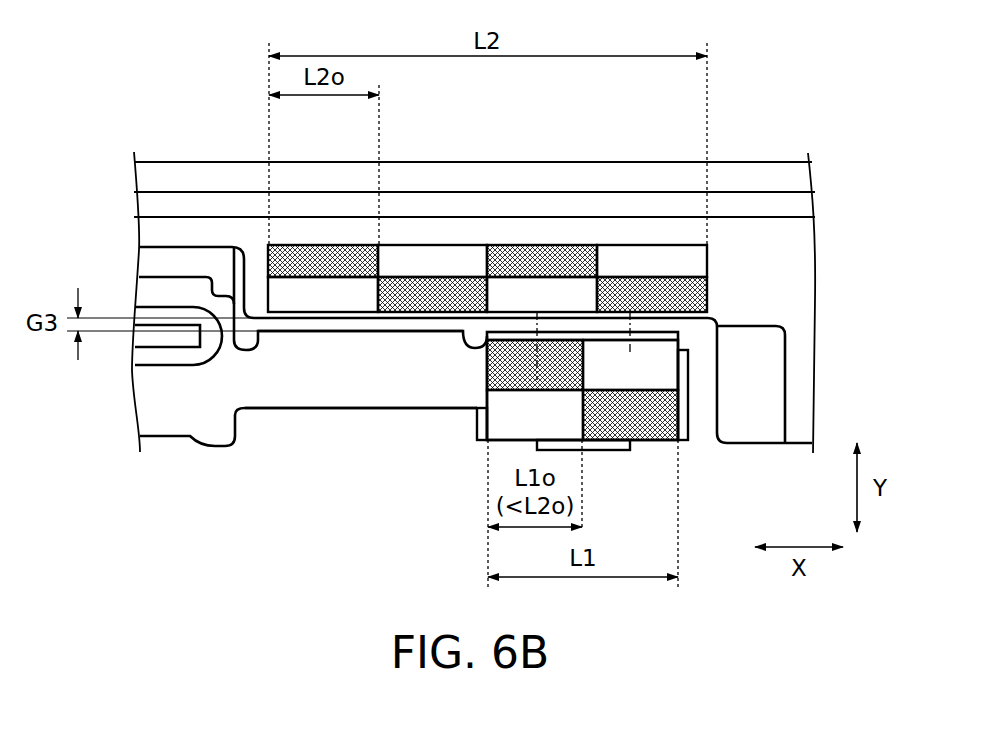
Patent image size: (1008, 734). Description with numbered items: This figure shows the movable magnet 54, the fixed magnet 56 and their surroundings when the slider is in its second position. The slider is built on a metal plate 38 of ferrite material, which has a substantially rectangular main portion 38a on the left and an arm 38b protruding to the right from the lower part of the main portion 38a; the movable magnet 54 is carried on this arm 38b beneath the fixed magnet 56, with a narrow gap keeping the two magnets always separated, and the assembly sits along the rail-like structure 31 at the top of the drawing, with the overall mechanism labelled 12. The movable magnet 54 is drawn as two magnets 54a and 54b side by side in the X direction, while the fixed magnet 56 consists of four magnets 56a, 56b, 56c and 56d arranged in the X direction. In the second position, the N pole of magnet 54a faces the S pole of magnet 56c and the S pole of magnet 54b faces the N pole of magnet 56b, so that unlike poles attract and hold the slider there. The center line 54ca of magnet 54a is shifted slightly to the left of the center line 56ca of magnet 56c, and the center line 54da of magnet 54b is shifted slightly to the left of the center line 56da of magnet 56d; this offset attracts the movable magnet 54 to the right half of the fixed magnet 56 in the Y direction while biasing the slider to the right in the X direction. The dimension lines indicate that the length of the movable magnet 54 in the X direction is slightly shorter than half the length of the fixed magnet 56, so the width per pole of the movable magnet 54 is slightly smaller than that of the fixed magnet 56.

The linear motor / drive unit 12 is at (200, 125).
The guide rail 31 is at (762, 175).
The metal plate 38 is at (465, 396).
The main portion 38a is at (178, 336).
The arm 38b is at (332, 387).
The movable magnet 54 is at (593, 438).
The magnet 54a is at (478, 423).
The magnet 54b is at (660, 425).
The center line 54ca is at (537, 427).
The center line 54da is at (625, 382).
The fixed magnet 56 is at (582, 222).
The magnet 56a is at (353, 253).
The magnet 56b is at (468, 257).
The magnet 56c is at (572, 255).
The center line 56ca is at (543, 240).
The magnet 56d is at (650, 175).
The center line 56da is at (660, 268).